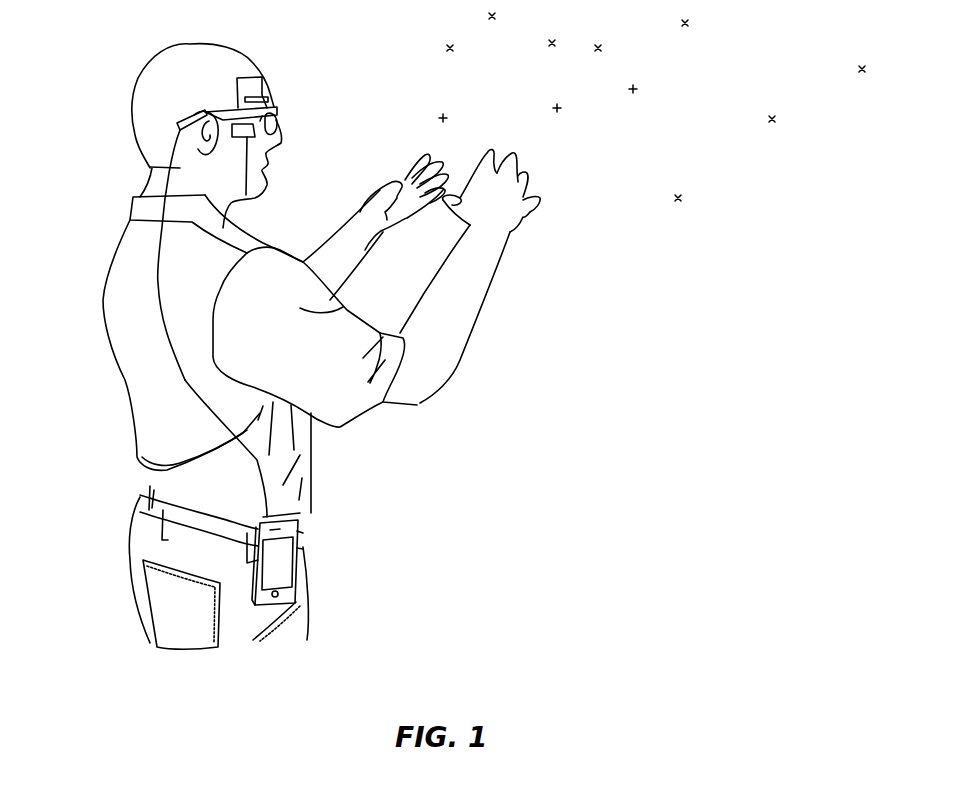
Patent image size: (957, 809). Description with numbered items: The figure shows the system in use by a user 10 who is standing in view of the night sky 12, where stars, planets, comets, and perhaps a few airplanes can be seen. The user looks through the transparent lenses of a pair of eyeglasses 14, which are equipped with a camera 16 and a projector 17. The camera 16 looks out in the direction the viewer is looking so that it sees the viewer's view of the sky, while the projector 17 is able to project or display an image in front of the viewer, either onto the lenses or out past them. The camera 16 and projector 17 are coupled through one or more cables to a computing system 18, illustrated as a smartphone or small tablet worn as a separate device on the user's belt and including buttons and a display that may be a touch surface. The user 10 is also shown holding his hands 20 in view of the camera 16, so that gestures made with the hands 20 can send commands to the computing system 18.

The user 10 is at (113, 278).
The night sky 12 is at (713, 74).
The eyeglasses 14 is at (280, 120).
The camera 16 is at (268, 98).
The projector 17 is at (247, 198).
The computing system 18 is at (285, 565).
The hands 20 is at (377, 187).